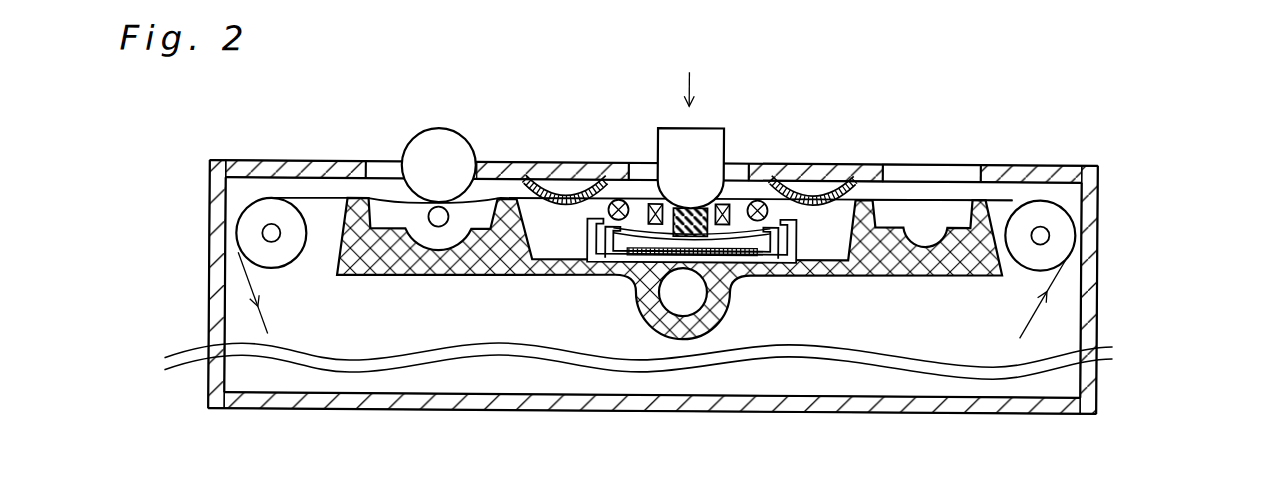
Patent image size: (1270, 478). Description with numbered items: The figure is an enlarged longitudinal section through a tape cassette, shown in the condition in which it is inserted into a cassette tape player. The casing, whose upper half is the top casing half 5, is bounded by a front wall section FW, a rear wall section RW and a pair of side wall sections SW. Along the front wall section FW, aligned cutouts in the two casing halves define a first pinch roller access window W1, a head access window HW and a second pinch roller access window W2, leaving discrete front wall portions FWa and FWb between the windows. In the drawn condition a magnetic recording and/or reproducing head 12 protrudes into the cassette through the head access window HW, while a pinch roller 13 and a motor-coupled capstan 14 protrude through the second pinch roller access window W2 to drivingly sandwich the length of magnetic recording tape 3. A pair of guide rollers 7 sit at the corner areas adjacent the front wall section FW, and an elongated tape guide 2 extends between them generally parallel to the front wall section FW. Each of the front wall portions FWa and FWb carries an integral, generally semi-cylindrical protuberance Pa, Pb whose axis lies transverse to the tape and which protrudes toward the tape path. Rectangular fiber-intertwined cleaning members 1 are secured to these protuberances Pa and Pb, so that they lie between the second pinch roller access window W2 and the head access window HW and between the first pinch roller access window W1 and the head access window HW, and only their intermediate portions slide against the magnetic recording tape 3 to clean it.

The fiber-intertwined cleaning member 1 is at (562, 205).
The tape guide 2 is at (583, 276).
The magnetic recording tape 3 is at (934, 197).
The top casing half 5 is at (1006, 165).
The guide roller 7 is at (299, 253).
The magnetic recording and/or reproducing head 12 is at (725, 151).
The pinch roller 13 is at (458, 151).
The motor-coupled capstan 14 is at (433, 227).
The front wall section FW is at (282, 160).
The second pinch roller access window W2 is at (387, 161).
The front wall portion FWa is at (531, 166).
The head access window HW is at (644, 166).
The front wall portion FWb is at (811, 171).
The semi-cylindrical protuberance Pa is at (569, 184).
The semi-cylindrical protuberance Pb is at (824, 187).
The first pinch roller access window W1 is at (900, 166).
The side wall section SW is at (204, 262).
The rear wall section RW is at (321, 415).